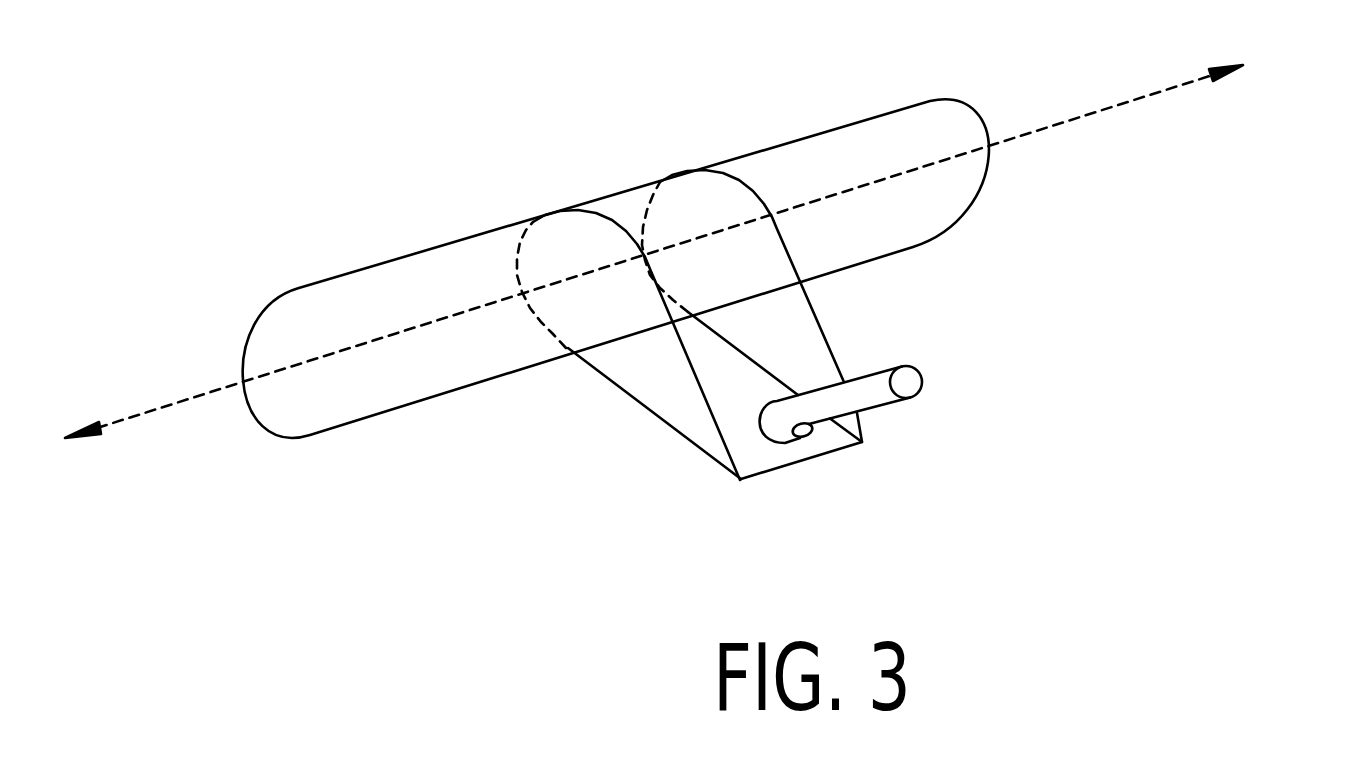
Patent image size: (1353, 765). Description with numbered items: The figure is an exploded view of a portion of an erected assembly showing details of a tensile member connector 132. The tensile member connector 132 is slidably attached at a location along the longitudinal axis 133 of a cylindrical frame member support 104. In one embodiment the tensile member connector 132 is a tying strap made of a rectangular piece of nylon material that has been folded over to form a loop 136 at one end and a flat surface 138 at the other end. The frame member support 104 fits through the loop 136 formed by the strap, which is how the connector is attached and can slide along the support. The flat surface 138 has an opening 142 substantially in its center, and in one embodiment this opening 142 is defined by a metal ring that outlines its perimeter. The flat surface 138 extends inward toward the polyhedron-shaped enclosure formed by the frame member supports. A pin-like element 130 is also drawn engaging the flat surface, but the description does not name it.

The frame member support 104 is at (834, 124).
The longitudinal axis 133 is at (693, 237).
The loop 136 is at (669, 286).
The tensile member connector 132 is at (738, 500).
The flat surface 138 is at (778, 347).
The pin 130 is at (908, 380).
The opening 142 is at (785, 452).